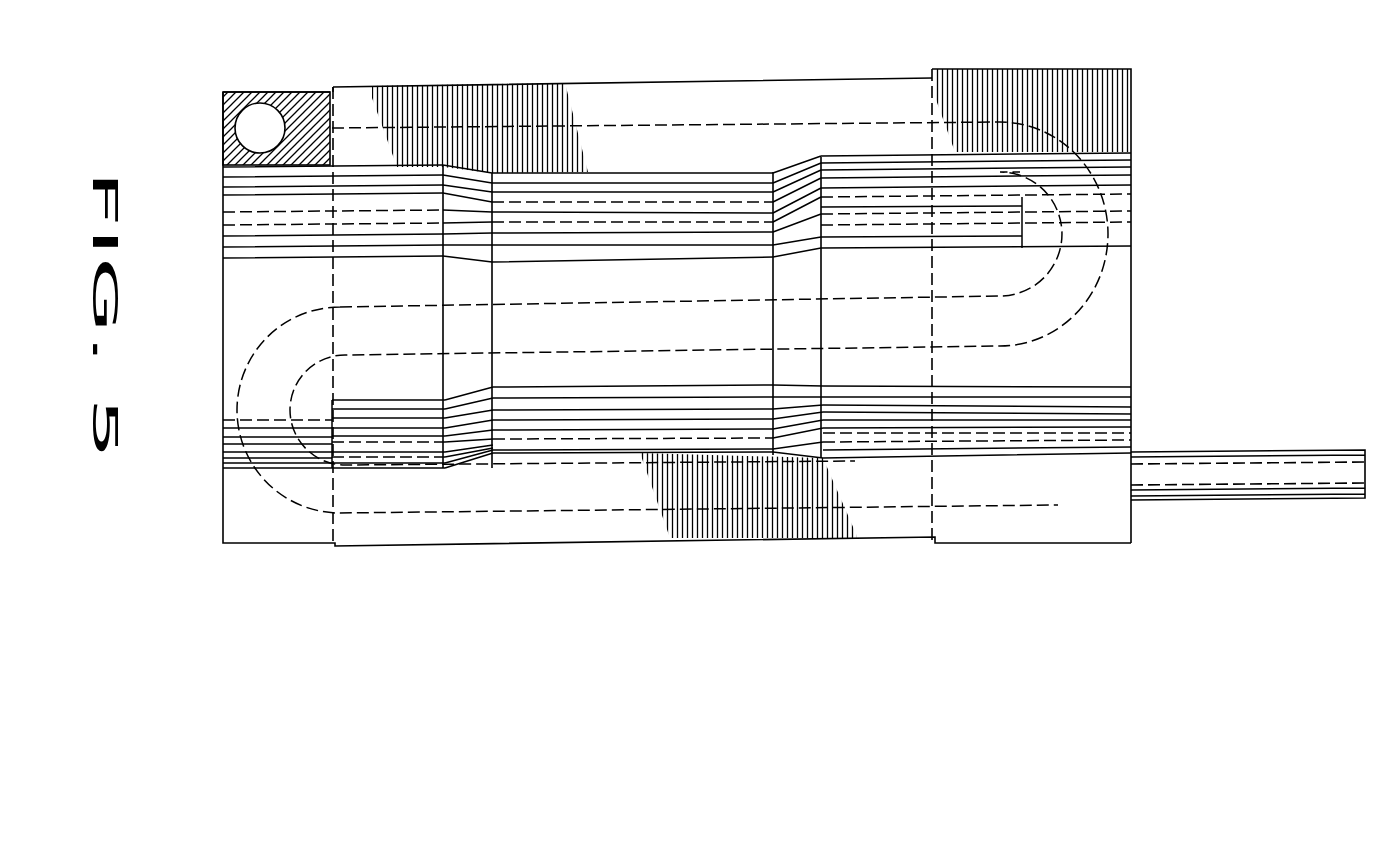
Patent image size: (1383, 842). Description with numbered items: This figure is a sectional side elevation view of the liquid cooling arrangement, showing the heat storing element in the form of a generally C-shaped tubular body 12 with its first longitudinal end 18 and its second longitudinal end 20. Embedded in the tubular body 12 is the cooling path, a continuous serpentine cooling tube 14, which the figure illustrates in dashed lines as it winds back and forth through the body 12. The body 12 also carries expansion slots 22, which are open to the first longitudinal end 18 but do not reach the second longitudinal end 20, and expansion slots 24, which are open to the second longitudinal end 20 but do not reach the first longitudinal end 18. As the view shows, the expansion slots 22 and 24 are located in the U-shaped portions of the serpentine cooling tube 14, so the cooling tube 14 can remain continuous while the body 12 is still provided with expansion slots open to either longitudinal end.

The tubular body 12 is at (735, 527).
The cooling tube 14 is at (1058, 505).
The first longitudinal end 18 is at (1131, 97).
The second longitudinal end 20 is at (223, 137).
The expansion slots 22 is at (1131, 390).
The expansion slots 24 is at (236, 251).